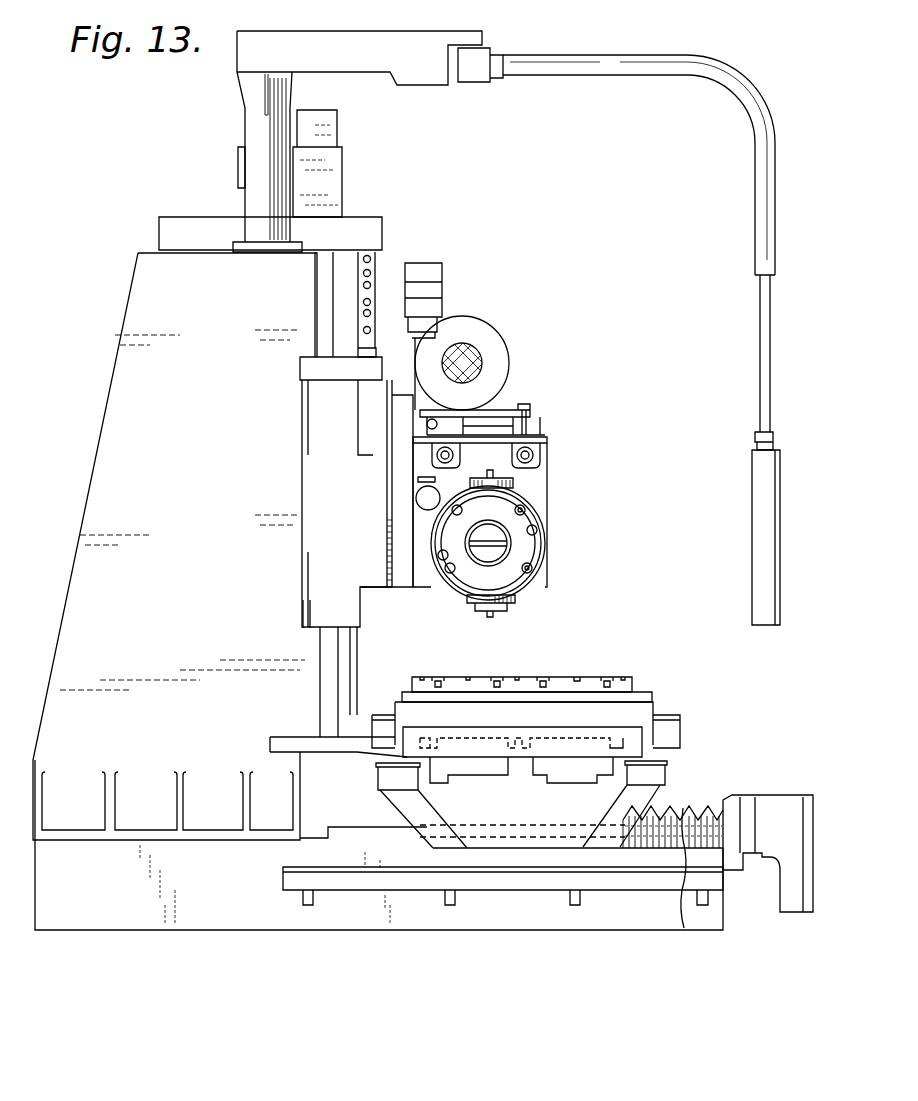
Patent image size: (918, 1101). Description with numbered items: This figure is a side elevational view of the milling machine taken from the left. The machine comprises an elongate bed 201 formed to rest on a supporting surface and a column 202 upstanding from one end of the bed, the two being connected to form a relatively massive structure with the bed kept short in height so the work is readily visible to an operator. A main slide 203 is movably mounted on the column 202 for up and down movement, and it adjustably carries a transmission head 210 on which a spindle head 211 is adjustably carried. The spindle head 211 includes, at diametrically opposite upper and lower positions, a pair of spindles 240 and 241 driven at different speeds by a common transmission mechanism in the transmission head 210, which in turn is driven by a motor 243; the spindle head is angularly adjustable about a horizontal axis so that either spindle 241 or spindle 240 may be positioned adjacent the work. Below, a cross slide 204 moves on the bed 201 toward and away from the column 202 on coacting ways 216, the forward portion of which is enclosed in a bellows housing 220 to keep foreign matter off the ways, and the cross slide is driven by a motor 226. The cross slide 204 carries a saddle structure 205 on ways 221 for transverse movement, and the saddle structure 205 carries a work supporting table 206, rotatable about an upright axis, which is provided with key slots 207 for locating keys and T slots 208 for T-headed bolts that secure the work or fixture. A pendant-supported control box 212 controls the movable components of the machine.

The bed 201 is at (200, 918).
The column 202 is at (203, 595).
The main slide 203 is at (367, 501).
The cross slide 204 is at (542, 816).
The saddle structure 205 is at (647, 753).
The work supporting table 206 is at (647, 692).
The key slots 207 is at (577, 677).
The T slots 208 is at (610, 678).
The transmission head 210 is at (543, 462).
The spindle head 211 is at (530, 548).
The control box 212 is at (768, 537).
The ways 216 is at (340, 828).
The bellows housing 220 is at (680, 812).
The ways 221 is at (610, 730).
The motor 226 is at (775, 855).
The spindle 240 is at (502, 472).
The spindle 241 is at (495, 613).
The motor 243 is at (490, 335).